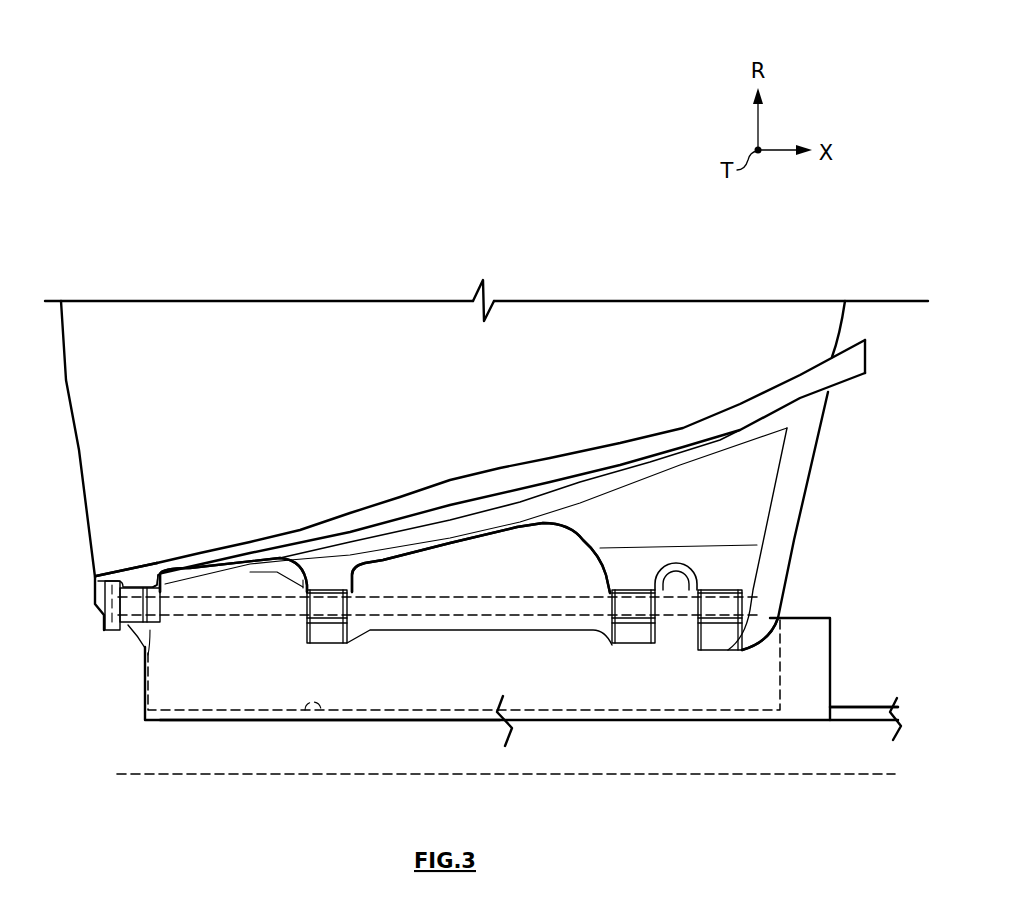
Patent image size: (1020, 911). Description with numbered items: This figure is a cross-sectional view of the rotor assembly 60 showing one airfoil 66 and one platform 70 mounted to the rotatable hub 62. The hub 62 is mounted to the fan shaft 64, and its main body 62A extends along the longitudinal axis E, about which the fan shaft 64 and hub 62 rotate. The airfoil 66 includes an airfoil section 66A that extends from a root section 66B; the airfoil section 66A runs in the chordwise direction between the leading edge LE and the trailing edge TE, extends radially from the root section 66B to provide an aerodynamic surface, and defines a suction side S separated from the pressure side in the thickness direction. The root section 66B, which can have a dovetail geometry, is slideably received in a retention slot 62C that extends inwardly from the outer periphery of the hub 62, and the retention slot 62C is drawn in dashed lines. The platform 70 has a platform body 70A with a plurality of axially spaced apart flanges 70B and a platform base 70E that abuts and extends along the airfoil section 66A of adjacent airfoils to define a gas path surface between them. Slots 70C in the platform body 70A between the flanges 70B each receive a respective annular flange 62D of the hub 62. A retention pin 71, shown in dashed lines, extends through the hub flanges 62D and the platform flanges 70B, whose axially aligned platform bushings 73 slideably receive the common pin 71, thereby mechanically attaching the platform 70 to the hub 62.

The rotor assembly 60 is at (97, 66).
The rotatable hub 62 is at (130, 705).
The main body 62A is at (198, 702).
The retention slot 62C is at (318, 712).
The flange 62D is at (250, 580).
The fan shaft 64 is at (869, 705).
The airfoil 66 is at (75, 290).
The airfoil section 66A is at (160, 316).
The root section 66B is at (757, 628).
The platform 70 is at (122, 555).
The platform body 70A is at (150, 555).
The flange 70B is at (155, 630).
The slot 70C is at (305, 630).
The platform base 70E is at (192, 560).
The retention pin 71 is at (104, 623).
The platform bushing 73 is at (126, 625).
The leading edge LE is at (61, 352).
The trailing edge TE is at (843, 318).
The suction side S is at (788, 320).
The longitudinal axis E is at (746, 778).